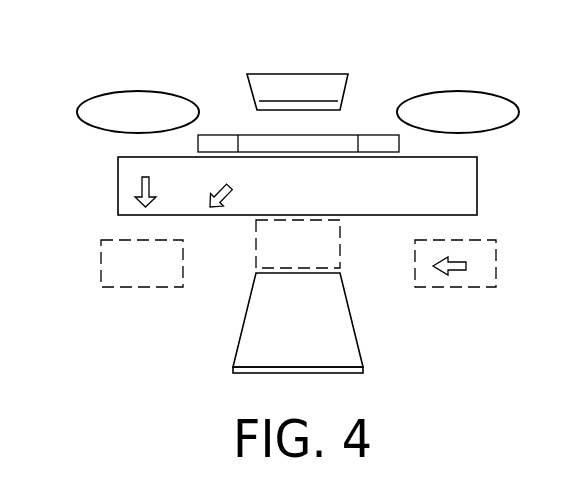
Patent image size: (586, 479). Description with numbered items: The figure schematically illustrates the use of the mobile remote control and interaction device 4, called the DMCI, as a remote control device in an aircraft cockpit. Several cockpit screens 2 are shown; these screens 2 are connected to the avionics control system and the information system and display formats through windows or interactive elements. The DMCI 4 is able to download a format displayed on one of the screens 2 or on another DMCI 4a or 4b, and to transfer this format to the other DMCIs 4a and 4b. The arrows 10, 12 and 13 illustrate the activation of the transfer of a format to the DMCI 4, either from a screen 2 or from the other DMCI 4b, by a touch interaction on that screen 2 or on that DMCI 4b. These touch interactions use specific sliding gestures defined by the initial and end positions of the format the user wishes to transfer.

The screen 2 is at (100, 102).
The arrow 10 is at (140, 184).
The arrow 12 is at (217, 208).
The mobile remote control and interaction device 4 is at (257, 340).
The DMCI 4a is at (108, 263).
The DMCI 4b is at (486, 258).
The arrow 13 is at (452, 272).